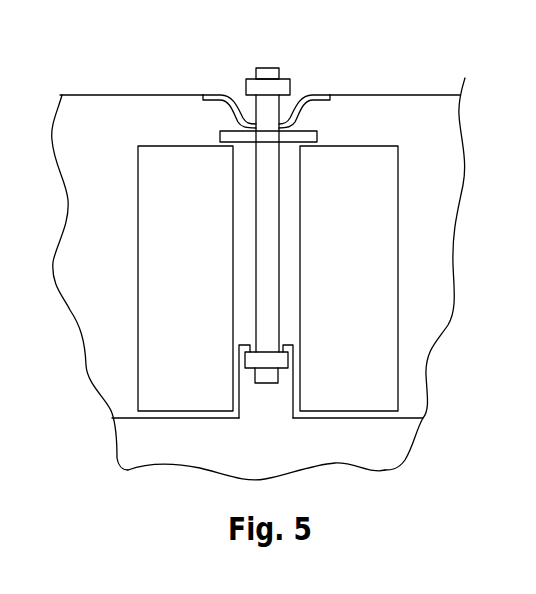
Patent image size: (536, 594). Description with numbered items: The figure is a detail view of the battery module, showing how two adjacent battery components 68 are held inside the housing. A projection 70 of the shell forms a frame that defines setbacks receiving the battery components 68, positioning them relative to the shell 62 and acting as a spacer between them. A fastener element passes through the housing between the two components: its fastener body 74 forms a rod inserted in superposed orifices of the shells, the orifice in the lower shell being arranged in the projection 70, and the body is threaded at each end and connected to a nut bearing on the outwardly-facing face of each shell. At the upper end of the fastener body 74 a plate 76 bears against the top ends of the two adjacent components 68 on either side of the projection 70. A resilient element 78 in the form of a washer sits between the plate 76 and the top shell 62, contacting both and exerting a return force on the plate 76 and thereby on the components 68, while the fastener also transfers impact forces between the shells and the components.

The top shell 62 is at (145, 95).
The battery components 68 is at (373, 220).
The projection 70 is at (240, 397).
The fastener body 74 is at (268, 296).
The plate 76 is at (306, 139).
The resilient element 78 is at (305, 112).